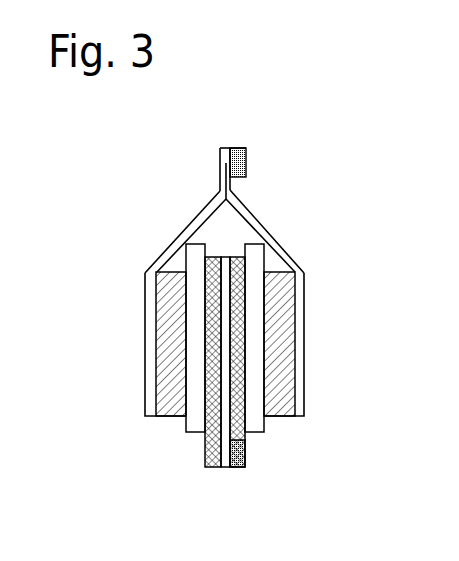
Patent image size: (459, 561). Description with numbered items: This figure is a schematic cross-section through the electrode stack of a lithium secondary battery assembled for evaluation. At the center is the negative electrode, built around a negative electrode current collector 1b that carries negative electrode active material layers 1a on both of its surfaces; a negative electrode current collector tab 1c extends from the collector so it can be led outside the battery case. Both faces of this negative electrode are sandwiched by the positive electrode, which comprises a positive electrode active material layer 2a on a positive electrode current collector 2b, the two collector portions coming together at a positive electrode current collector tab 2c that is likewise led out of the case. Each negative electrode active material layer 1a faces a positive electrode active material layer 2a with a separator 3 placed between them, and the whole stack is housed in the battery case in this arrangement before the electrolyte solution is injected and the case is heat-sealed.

The negative electrode active material layer 1a is at (250, 410).
The negative electrode current collector 1b is at (223, 467).
The negative electrode current collector tab 1c is at (240, 454).
The positive electrode active material layer 2a is at (168, 321).
The positive electrode current collector 2b is at (183, 237).
The positive electrode current collector tab 2c is at (240, 160).
The separator 3 is at (197, 397).